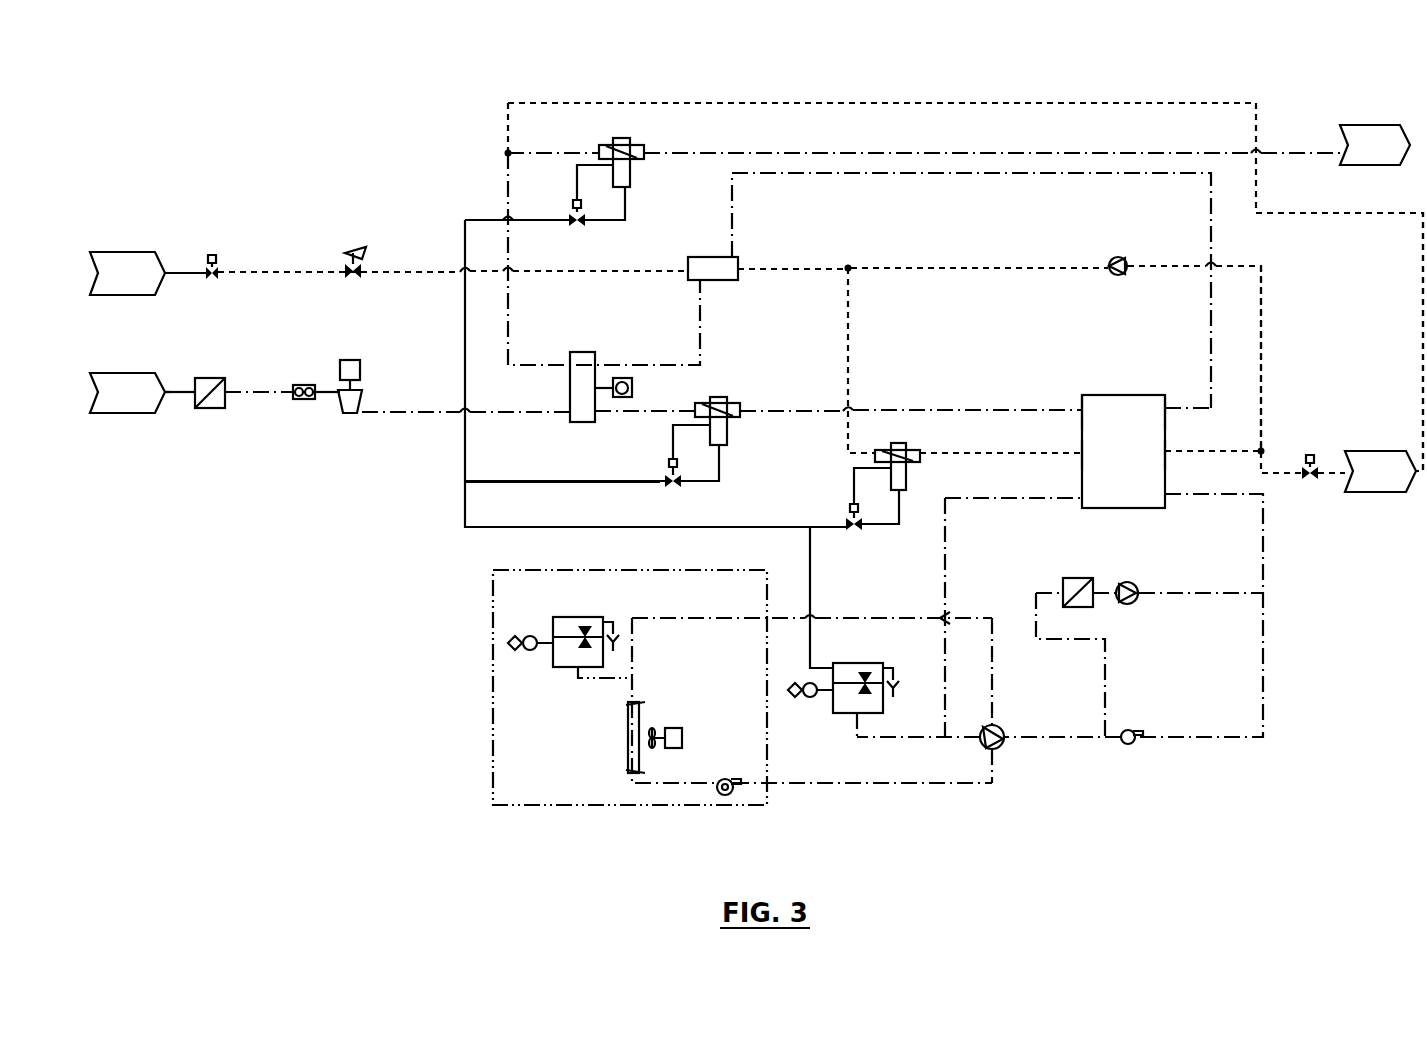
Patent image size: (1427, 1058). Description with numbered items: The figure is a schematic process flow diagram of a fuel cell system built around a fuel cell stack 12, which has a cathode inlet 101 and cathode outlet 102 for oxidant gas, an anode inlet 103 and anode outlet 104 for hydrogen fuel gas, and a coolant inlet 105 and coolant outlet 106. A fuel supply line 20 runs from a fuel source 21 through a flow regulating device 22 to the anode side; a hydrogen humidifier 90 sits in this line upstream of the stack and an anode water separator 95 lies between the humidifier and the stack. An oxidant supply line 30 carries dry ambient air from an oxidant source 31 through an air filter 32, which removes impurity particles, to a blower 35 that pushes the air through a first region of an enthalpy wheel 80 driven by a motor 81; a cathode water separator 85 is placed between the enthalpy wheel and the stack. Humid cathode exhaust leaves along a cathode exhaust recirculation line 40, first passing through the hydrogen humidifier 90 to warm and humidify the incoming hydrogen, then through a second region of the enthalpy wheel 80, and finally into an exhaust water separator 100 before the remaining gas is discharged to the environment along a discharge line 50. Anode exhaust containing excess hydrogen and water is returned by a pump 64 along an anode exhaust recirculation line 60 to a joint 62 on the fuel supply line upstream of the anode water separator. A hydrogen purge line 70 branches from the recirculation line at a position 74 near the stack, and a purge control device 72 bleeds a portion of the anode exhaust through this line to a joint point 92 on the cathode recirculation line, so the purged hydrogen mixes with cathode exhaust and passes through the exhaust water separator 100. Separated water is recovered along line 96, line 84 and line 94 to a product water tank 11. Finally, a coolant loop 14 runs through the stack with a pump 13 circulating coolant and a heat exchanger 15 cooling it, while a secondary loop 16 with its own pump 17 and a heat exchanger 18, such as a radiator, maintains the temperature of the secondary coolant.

The product water tank 11 is at (868, 715).
The fuel cell stack 12 is at (1100, 397).
The pump 13 is at (1128, 748).
The coolant loop 14 is at (1265, 660).
The heat exchanger 15 is at (997, 752).
The secondary loop 16 is at (840, 786).
The pump 17 is at (728, 798).
The heat exchanger 18 is at (627, 718).
The fuel supply line 20 is at (244, 268).
The fuel source 21 is at (148, 256).
The flow regulating device 22 is at (348, 258).
The oxidant supply line 30 is at (178, 395).
The oxidant source 31 is at (148, 378).
The air filter 32 is at (213, 408).
The blower 35 is at (345, 415).
The cathode exhaust recirculation line 40 is at (1054, 172).
The discharge line 50 is at (1385, 125).
The anode exhaust recirculation line 60 is at (1262, 334).
The joint 62 is at (851, 266).
The pump 64 is at (1125, 258).
The hydrogen purge line 70 is at (1420, 272).
The purge control device 72 is at (1318, 466).
The position 74 is at (1264, 450).
The enthalpy wheel 80 is at (597, 355).
The motor 81 is at (635, 390).
The line 84 is at (478, 498).
The cathode water separator 85 is at (722, 437).
The hydrogen humidifier 90 is at (740, 266).
The joint point 92 is at (505, 152).
The line 94 is at (466, 455).
The anode water separator 95 is at (900, 440).
The line 96 is at (858, 530).
The exhaust water separator 100 is at (622, 148).
The cathode inlet 101 is at (1082, 397).
The cathode outlet 102 is at (1165, 397).
The anode inlet 103 is at (1085, 452).
The anode outlet 104 is at (1163, 456).
The coolant inlet 105 is at (1168, 508).
The coolant outlet 106 is at (1080, 508).